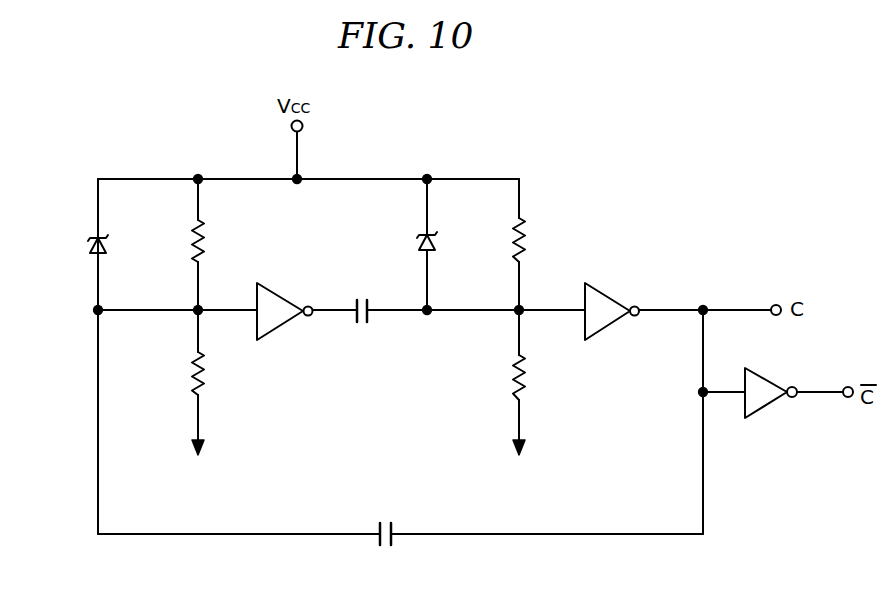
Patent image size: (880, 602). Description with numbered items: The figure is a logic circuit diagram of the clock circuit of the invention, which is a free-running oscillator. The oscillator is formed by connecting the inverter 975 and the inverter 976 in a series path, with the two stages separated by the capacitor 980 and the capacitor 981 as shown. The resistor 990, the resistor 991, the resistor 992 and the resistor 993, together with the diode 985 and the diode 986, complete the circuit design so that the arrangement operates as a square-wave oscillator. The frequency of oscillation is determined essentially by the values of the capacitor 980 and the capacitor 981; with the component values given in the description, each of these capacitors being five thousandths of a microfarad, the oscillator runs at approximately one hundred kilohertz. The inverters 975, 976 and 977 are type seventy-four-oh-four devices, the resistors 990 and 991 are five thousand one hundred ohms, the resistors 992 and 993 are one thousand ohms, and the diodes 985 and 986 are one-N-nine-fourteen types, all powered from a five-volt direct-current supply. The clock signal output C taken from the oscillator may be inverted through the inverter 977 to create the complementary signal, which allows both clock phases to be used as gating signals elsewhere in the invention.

The diode 985 is at (92, 238).
The resistor 990 is at (195, 240).
The diode 986 is at (422, 238).
The resistor 991 is at (515, 240).
The resistor 992 is at (195, 378).
The resistor 993 is at (515, 380).
The inverter 975 is at (264, 340).
The capacitor 980 is at (369, 313).
The inverter 976 is at (600, 290).
The inverter 977 is at (764, 416).
The capacitor 981 is at (378, 526).